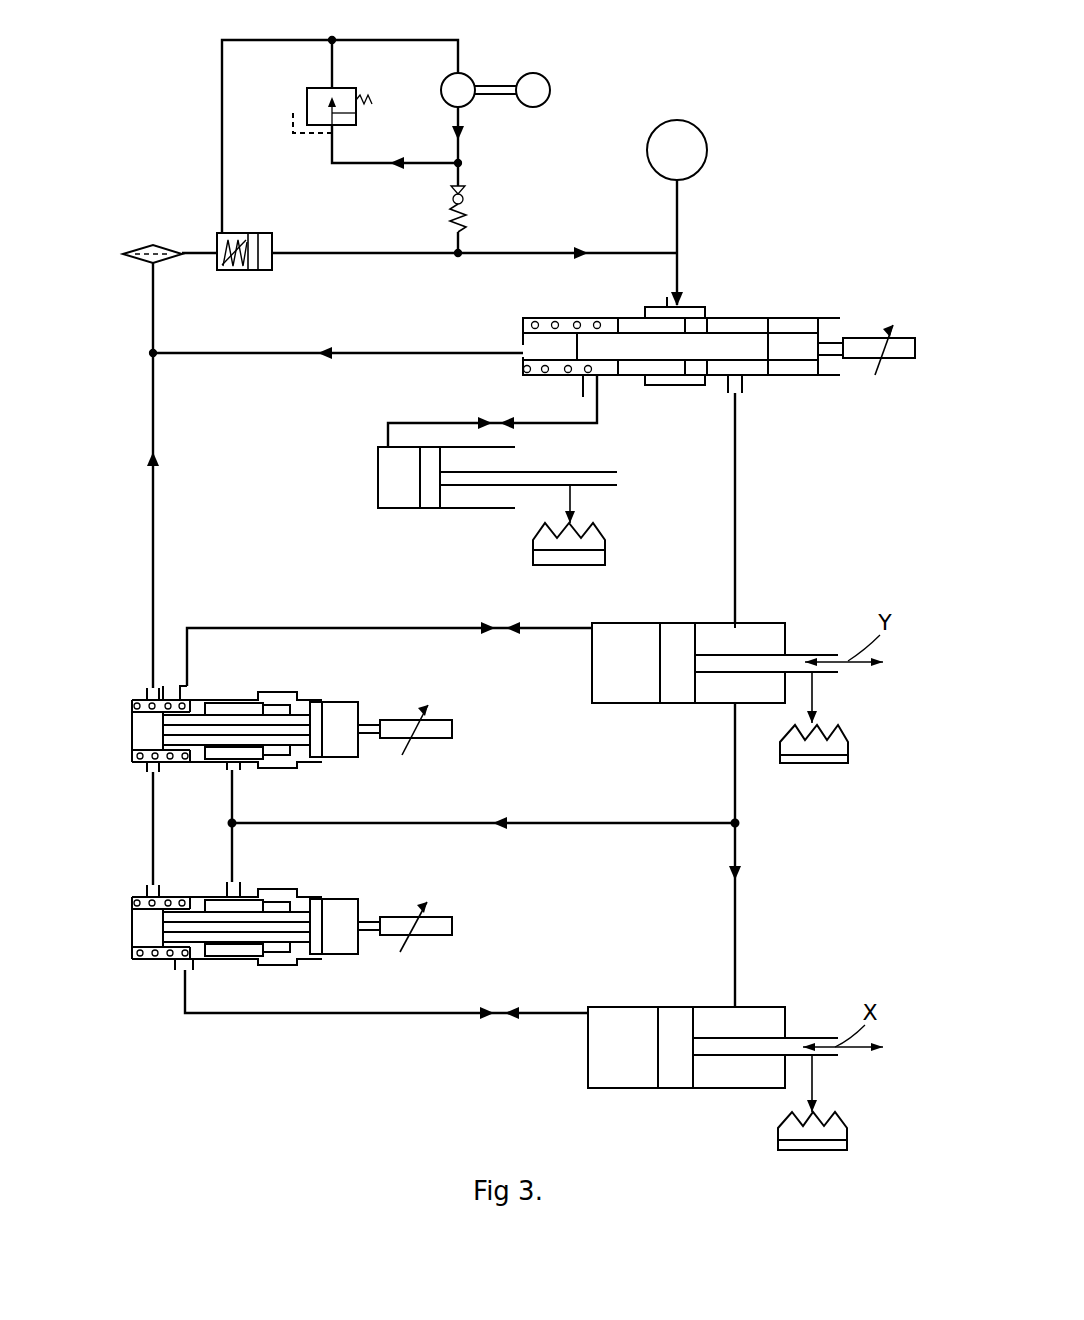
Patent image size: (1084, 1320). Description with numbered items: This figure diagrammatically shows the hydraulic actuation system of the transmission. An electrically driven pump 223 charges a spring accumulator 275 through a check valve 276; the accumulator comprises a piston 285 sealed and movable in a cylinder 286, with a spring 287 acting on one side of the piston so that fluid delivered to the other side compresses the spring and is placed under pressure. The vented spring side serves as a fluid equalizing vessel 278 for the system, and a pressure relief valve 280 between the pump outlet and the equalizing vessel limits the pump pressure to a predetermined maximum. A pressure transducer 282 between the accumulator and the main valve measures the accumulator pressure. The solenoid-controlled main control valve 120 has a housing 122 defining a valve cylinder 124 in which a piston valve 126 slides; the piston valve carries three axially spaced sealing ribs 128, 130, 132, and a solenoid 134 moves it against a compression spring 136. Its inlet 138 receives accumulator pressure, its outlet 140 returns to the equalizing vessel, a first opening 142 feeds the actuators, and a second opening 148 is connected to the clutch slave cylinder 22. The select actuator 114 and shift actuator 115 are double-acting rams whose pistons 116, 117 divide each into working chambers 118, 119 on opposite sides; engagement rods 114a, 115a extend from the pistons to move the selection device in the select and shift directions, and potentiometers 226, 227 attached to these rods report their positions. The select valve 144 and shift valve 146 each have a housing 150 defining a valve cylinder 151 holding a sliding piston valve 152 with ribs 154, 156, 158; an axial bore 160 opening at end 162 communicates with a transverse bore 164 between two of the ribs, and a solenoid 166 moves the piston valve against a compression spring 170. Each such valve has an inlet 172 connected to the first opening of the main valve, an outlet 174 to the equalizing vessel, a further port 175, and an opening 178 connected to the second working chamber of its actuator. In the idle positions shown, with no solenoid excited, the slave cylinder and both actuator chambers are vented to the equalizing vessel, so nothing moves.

The clutch slave cylinder 22 is at (378, 475).
The first actuator 114 is at (663, 1076).
The engagement rod 114a is at (745, 1058).
The actuator 115 is at (665, 848).
The engagement rod 115a is at (766, 660).
The piston 116 is at (670, 1088).
The piston 117 is at (680, 703).
The working chamber 118 is at (750, 628).
The working chamber 119 is at (592, 700).
The main control valve 120 is at (663, 624).
The housing 122 is at (795, 377).
The valve cylinder 124 is at (740, 326).
The piston valve 126 is at (808, 378).
The rib 128 is at (812, 330).
The rib 130 is at (688, 385).
The rib 132 is at (610, 321).
The solenoid 134 is at (890, 358).
The compression spring 136 is at (552, 321).
The inlet 138 is at (690, 307).
The outlet 140 is at (535, 325).
The first opening 142 is at (742, 390).
The select valve 144 is at (360, 897).
The shift valve 146 is at (360, 700).
The second opening 148 is at (598, 392).
The housing 150 is at (372, 718).
The valve cylinder 151 is at (138, 745).
The piston valve 152 is at (350, 745).
The rib 154 is at (340, 703).
The rib 156 is at (280, 694).
The rib 158 is at (232, 703).
The axial bore 160 is at (162, 730).
The end 162 is at (162, 740).
The transverse bore 164 is at (328, 715).
The solenoid 166 is at (450, 722).
The compression spring 170 is at (143, 703).
The inlet 172 is at (240, 768).
The outlet 174 is at (150, 686).
The valve port 175 is at (150, 772).
The opening 178 is at (188, 690).
The electrically driven pump 223 is at (462, 78).
The potentiometer 226 is at (780, 1140).
The potentiometer 227 is at (822, 762).
The spring accumulator 275 is at (238, 270).
The check valve 276 is at (476, 215).
The fluid equalizing vessel 278 is at (248, 262).
The pressure relief valve 280 is at (307, 98).
The pressure transducer 282 is at (700, 150).
The piston 285 is at (258, 236).
The cylinder 286 is at (268, 270).
The spring 287 is at (222, 268).